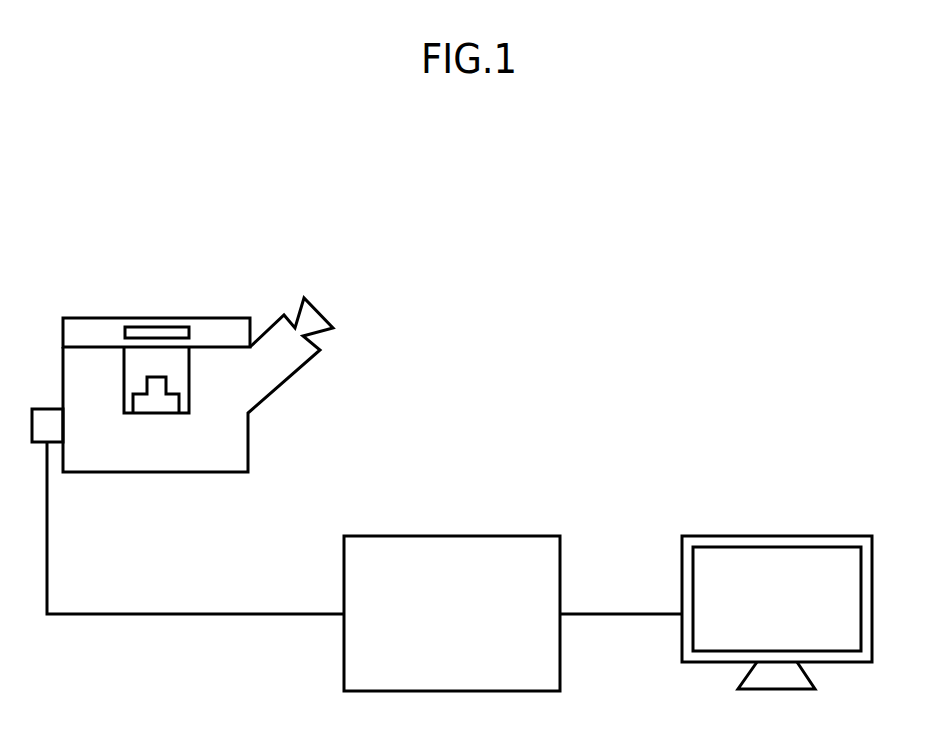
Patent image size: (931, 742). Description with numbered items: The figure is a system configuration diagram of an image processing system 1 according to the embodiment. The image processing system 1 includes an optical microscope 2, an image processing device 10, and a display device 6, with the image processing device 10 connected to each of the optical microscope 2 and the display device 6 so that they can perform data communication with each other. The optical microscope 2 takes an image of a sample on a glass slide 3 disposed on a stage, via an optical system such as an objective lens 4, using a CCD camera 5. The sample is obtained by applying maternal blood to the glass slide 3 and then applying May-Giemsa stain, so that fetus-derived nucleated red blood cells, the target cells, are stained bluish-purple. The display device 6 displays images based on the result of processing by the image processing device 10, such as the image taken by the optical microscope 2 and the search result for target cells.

The image processing system 1 is at (746, 252).
The optical microscope 2 is at (281, 287).
The glass slide 3 is at (156, 327).
The objective lens 4 is at (158, 405).
The CCD camera 5 is at (48, 409).
The display device 6 is at (776, 536).
The image processing device 10 is at (451, 536).